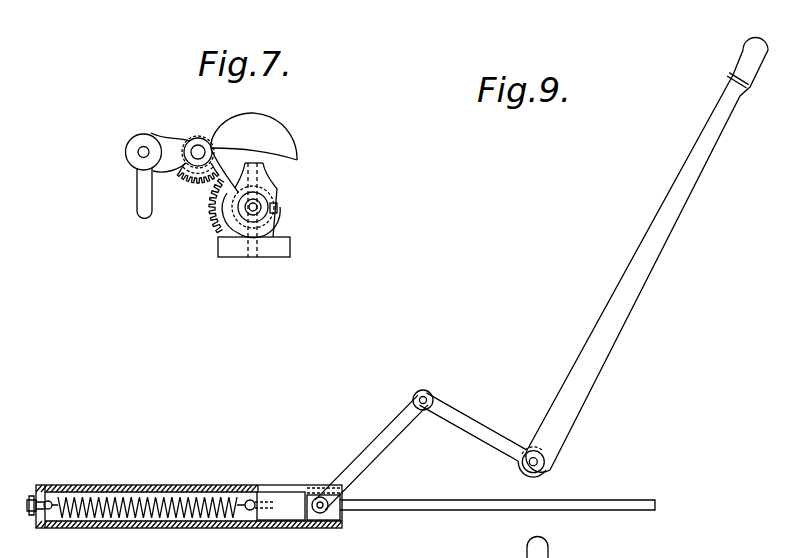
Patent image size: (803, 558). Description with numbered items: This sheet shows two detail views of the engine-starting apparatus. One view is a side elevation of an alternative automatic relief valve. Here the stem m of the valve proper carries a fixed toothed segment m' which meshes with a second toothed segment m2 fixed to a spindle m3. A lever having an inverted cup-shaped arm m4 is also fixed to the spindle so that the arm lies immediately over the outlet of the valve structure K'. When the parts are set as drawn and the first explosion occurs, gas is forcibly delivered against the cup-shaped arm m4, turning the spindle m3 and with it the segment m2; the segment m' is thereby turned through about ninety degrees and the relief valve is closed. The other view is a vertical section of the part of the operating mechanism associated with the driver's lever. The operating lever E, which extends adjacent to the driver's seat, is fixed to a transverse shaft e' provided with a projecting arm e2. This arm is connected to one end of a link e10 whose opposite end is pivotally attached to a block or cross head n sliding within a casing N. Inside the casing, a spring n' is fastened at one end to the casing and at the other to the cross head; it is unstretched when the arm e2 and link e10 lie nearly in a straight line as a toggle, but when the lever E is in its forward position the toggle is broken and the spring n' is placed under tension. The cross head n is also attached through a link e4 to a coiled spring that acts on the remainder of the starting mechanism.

In FIG. 7, the second toothed segment m2 is at (158, 176).
In FIG. 7, the spindle m3 is at (199, 148).
In FIG. 7, the inverted cup-shaped arm m4 is at (282, 143).
In FIG. 7, the valve stem m is at (267, 202).
In FIG. 7, the toothed segment m' is at (205, 213).
In FIG. 7, the valve structure K' is at (270, 210).
In FIG. 9, the casing N is at (230, 485).
In FIG. 9, the spring n' is at (158, 524).
In FIG. 9, the block or cross head n is at (298, 519).
In FIG. 9, the link e10 is at (360, 454).
In FIG. 9, the projecting arm e2 is at (486, 418).
In FIG. 9, the transverse shaft e' is at (548, 460).
In FIG. 9, the operating lever E is at (645, 253).
In FIG. 9, the link e4 is at (443, 510).